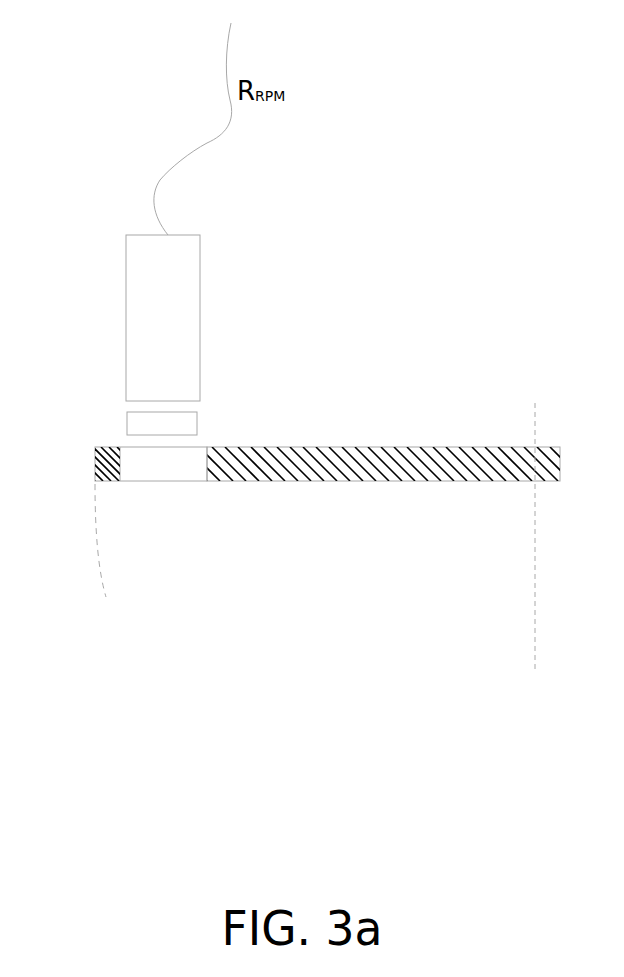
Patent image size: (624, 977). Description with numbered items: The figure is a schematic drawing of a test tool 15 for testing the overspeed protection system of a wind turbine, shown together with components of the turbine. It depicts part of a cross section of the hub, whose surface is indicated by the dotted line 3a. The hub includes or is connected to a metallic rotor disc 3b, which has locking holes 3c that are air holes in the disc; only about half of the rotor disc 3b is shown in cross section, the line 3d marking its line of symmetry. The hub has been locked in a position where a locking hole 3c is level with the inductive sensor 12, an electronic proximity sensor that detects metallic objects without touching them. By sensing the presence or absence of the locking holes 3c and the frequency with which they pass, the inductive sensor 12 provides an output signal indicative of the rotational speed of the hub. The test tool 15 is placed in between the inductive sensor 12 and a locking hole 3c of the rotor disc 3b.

The inductive sensor 12 is at (163, 318).
The test tool 15 is at (197, 423).
The dotted line 3a is at (77, 540).
The rotor disc 3b is at (393, 447).
The locking hole 3c is at (130, 457).
The line of symmetry 3d is at (523, 562).